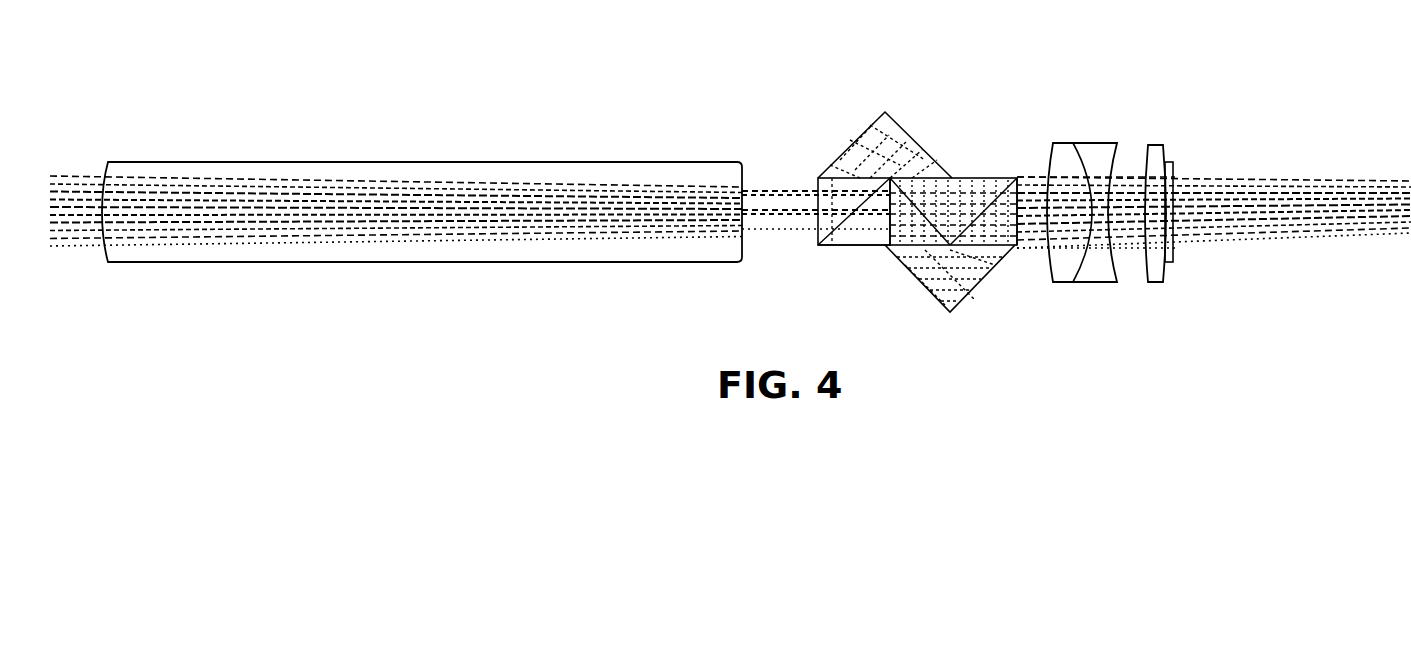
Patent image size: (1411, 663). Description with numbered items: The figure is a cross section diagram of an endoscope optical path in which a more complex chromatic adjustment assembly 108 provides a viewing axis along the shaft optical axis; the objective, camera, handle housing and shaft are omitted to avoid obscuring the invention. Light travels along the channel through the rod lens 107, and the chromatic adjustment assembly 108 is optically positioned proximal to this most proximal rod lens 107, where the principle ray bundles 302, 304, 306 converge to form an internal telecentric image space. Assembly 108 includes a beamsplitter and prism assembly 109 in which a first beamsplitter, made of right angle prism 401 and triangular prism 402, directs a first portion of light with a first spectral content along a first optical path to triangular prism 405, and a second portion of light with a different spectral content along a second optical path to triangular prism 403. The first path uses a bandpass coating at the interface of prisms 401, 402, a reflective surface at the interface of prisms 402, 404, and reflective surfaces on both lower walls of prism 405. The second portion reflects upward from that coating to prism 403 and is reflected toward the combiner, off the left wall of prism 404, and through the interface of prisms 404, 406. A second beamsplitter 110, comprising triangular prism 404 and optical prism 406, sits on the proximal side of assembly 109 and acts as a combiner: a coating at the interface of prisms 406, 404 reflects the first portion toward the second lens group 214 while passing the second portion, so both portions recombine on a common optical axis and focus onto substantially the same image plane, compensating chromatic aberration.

The rod lens 107 is at (410, 160).
The chromatic adjustment assembly 108 is at (846, 173).
The beamsplitter and prism assembly 109 is at (846, 198).
The second beamsplitter 110 is at (972, 215).
The second lens group 214 is at (1118, 128).
The principle ray bundle 302 is at (758, 178).
The principle ray bundle 304 is at (795, 220).
The principle ray bundle 306 is at (774, 243).
The right angle prism 401 is at (818, 186).
The triangular prism 402 is at (866, 250).
The triangular prism 403 is at (880, 118).
The triangular prism 404 is at (957, 178).
The triangular prism 405 is at (929, 292).
The optical prism 406 is at (1020, 185).